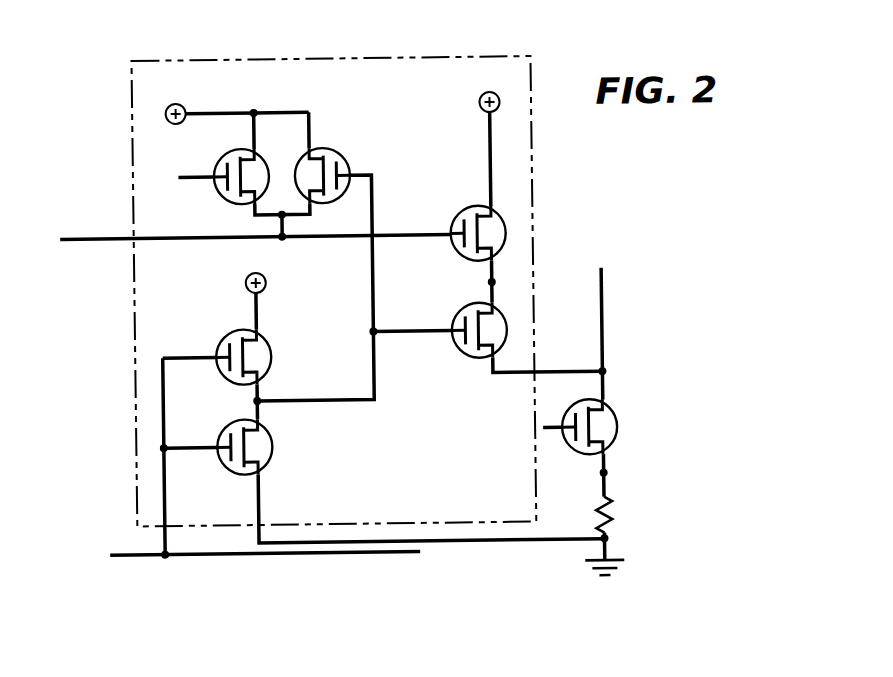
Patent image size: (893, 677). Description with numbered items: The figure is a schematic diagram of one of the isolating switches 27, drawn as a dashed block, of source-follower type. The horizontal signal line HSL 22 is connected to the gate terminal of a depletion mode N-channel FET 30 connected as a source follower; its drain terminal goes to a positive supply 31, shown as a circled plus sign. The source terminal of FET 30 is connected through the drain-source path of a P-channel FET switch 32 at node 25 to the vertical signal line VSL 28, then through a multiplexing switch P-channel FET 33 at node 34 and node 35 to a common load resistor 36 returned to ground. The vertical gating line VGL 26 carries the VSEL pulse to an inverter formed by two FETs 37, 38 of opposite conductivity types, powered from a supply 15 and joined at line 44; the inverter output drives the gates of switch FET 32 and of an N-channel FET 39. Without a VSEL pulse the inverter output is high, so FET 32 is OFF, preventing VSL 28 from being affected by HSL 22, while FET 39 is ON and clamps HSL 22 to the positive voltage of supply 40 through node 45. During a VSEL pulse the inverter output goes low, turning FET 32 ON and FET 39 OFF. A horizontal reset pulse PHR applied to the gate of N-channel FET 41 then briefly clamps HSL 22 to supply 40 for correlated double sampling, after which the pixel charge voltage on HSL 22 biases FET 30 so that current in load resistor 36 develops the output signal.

The supply voltage terminal 15 is at (246, 282).
The HSL 22 is at (100, 236).
The circuit node 25 is at (496, 281).
The vertical address or gating line (VGL) 26 is at (381, 556).
The isolating switch 27 is at (133, 284).
The VSL 28 is at (603, 286).
The N-channel FET 30 is at (461, 213).
The positive supply 31 is at (484, 98).
The P-channel FET switch 32 is at (460, 312).
The multiplexing switch P-channel FET 33 is at (610, 416).
The circuit node 34 is at (606, 373).
The circuit node 35 is at (606, 474).
The load resistor 36 is at (621, 506).
The FET 37 is at (272, 445).
The FET 38 is at (264, 339).
The N-channel FET 39 is at (329, 148).
The supply 40 is at (177, 102).
The N-channel FET 41 is at (221, 153).
The connection line 44 is at (370, 338).
The circuit node 45 is at (286, 242).